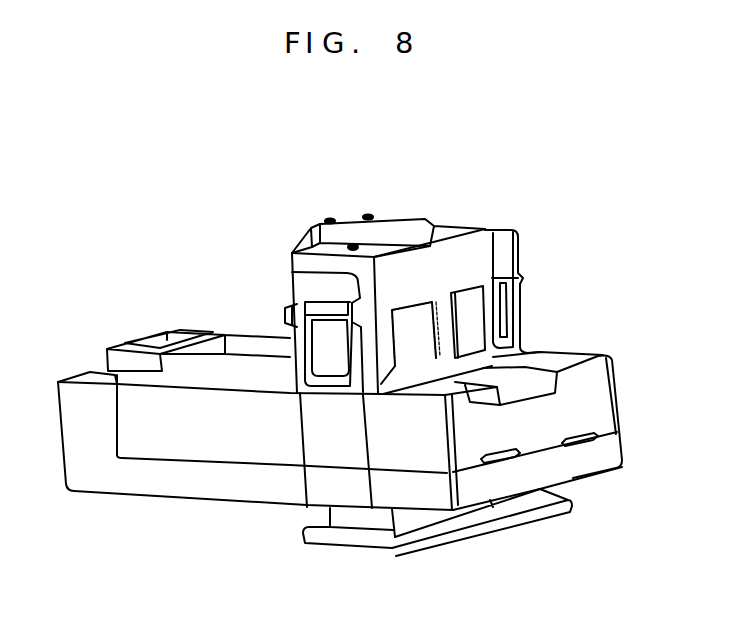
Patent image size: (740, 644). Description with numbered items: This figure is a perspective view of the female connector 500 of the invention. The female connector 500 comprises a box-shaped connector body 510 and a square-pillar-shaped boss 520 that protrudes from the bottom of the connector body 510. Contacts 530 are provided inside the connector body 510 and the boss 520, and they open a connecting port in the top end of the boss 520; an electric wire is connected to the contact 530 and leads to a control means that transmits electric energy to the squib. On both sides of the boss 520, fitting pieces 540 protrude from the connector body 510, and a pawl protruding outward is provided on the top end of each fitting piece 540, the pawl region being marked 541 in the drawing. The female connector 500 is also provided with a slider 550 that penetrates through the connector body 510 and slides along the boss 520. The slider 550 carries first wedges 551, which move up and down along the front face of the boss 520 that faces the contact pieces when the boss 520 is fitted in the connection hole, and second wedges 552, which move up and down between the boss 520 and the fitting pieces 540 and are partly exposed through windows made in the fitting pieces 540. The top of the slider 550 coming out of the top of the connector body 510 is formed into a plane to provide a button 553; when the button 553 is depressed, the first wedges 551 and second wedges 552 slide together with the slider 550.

The female connector 500 is at (97, 158).
The connector body 510 is at (188, 524).
The boss 520 is at (450, 230).
The contact 530 is at (351, 244).
The fitting piece 540 is at (303, 285).
The clip notch 541 is at (296, 318).
The slider 550 is at (362, 541).
The first wedge 551 is at (418, 351).
The second wedge 552 is at (500, 298).
The button 553 is at (473, 537).